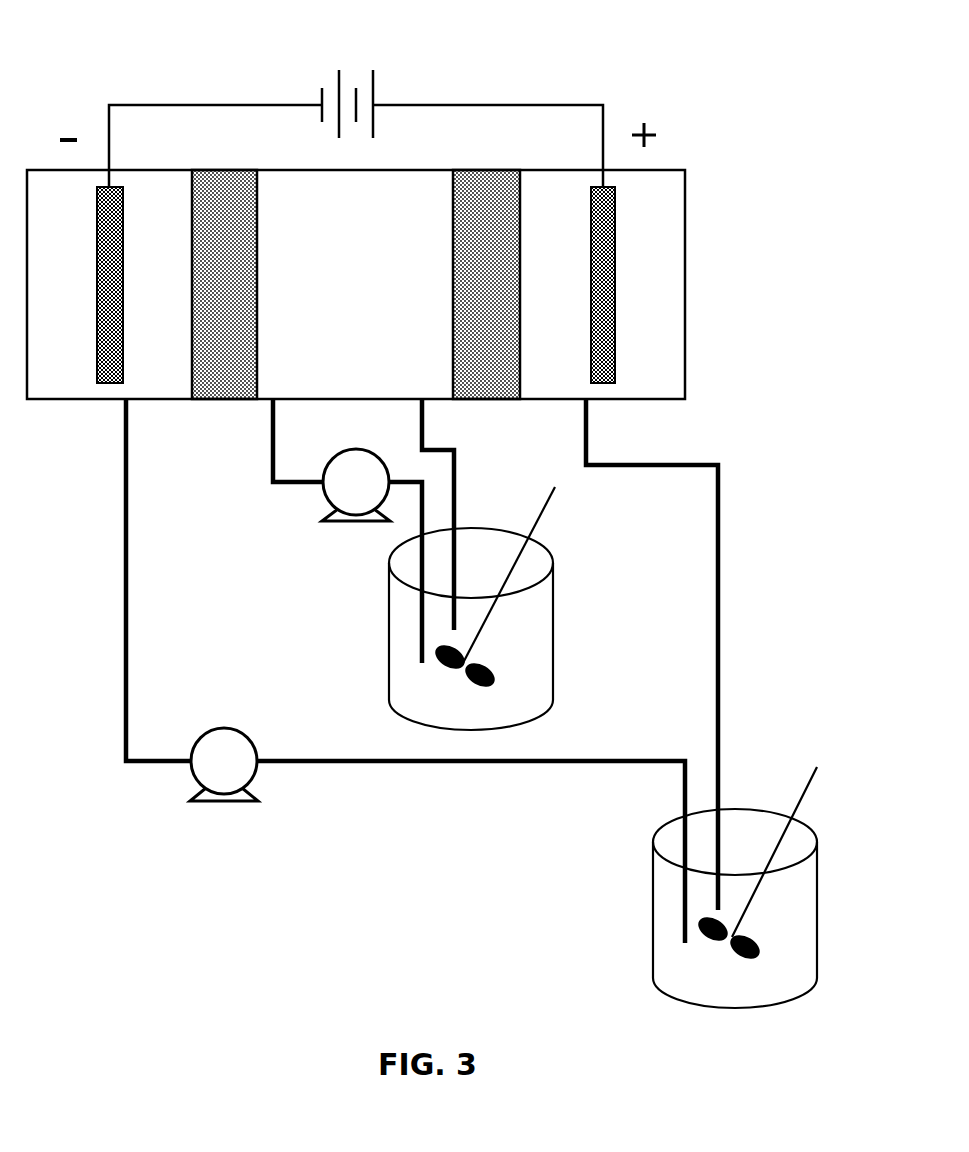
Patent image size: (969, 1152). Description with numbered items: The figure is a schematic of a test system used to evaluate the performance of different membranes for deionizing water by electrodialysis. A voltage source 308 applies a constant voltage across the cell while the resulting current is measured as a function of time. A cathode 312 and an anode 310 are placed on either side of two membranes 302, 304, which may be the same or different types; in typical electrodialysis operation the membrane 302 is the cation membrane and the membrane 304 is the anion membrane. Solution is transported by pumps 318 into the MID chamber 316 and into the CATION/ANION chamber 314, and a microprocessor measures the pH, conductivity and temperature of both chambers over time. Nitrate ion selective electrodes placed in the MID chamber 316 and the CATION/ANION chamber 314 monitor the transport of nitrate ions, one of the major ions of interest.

The membrane 302 is at (229, 186).
The membrane 304 is at (490, 186).
The voltage source 308 is at (354, 60).
The anode 310 is at (603, 364).
The cathode 312 is at (112, 362).
The CATION/ANION chamber 314 is at (652, 942).
The MID chamber 316 is at (556, 647).
The pumps 318 is at (322, 498).